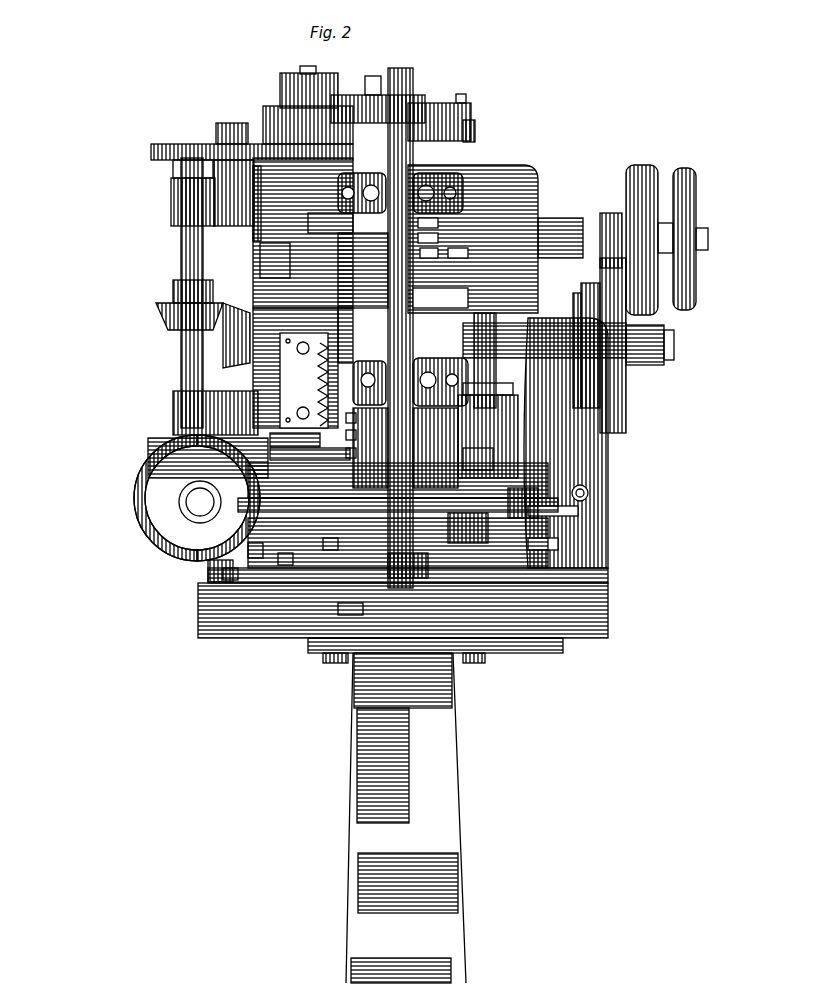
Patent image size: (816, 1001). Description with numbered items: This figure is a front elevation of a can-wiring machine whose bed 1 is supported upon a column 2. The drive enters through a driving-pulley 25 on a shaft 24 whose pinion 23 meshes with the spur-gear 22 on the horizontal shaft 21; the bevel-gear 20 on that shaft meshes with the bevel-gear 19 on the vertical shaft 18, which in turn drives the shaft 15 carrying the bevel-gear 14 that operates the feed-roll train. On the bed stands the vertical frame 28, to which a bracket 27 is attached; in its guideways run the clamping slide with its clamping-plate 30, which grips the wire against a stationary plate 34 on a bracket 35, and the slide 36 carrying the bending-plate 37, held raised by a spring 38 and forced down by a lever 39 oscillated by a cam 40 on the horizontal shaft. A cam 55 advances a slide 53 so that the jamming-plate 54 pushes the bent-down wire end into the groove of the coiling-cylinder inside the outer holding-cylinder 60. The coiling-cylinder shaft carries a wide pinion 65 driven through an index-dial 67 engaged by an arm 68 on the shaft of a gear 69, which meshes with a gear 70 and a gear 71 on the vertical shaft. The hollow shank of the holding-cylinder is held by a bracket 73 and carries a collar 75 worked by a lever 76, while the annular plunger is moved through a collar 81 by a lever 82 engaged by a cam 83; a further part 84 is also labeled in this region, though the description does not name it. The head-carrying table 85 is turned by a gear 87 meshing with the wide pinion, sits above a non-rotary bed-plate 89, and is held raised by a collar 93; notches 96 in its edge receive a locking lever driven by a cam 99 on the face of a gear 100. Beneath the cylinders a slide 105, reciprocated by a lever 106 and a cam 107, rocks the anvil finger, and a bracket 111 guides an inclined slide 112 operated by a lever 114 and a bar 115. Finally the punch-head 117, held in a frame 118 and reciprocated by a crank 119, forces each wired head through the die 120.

The bed 1 is at (600, 600).
The column 2 is at (445, 800).
The bevel-gear 14 is at (430, 300).
The shaft 15 is at (152, 506).
The vertical shaft 18 is at (173, 362).
The bevel-gear 19 is at (150, 300).
The bevel-gear 20 is at (215, 330).
The horizontal shaft 21 is at (652, 350).
The spur-gear 22 is at (608, 400).
The pinion 23 is at (600, 205).
The shaft 24 is at (555, 215).
The driving-pulley 25 is at (640, 167).
The bracket 27 is at (272, 326).
The vertical frame 28 is at (505, 170).
The clamping-plate 30 is at (362, 435).
The stationary plate 34 is at (362, 453).
The bracket 35 is at (295, 443).
The slide 36 is at (335, 384).
The bending-plate 37 is at (363, 418).
The spring 38 is at (167, 398).
The lever 39 is at (248, 250).
The cam 40 is at (305, 236).
The slide 53 is at (170, 440).
The jamming-plate 54 is at (310, 450).
The cam 55 is at (130, 470).
The outer holding-cylinder 60 is at (465, 435).
The wide pinion 65 is at (400, 95).
The index-dial 67 is at (452, 100).
The arm 68 is at (330, 85).
The gear 69 is at (268, 100).
The gear 70 is at (228, 116).
The gear 71 is at (178, 136).
The bracket 73 is at (448, 162).
The collar 75 is at (432, 214).
The lever 76 is at (432, 230).
The collar 81 is at (432, 246).
The lever 82 is at (462, 246).
The cam 83 is at (345, 212).
The sleeve 84 is at (380, 418).
The table 85 is at (545, 535).
The gear 87 is at (465, 118).
The bed-plate 89 is at (462, 520).
The collar 93 is at (455, 198).
The notches 96 is at (400, 570).
The cam 99 is at (574, 405).
The gear 100 is at (595, 378).
The slide 105 is at (222, 570).
The lever 106 is at (198, 562).
The cam 107 is at (172, 494).
The bracket 111 is at (355, 613).
The inclined slide 112 is at (323, 540).
The lever 114 is at (277, 555).
The bar 115 is at (247, 545).
The punch-head 117 is at (560, 502).
The frame 118 is at (596, 445).
The crank 119 is at (520, 318).
The die 120 is at (527, 485).